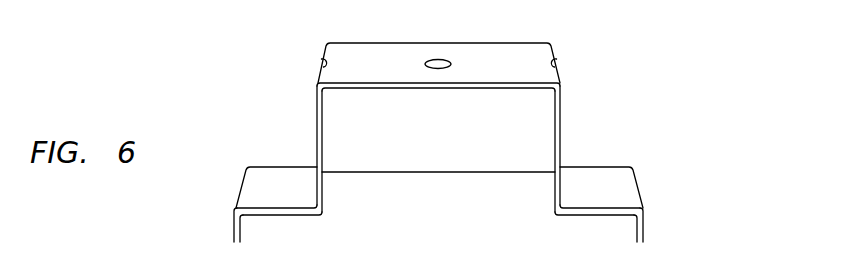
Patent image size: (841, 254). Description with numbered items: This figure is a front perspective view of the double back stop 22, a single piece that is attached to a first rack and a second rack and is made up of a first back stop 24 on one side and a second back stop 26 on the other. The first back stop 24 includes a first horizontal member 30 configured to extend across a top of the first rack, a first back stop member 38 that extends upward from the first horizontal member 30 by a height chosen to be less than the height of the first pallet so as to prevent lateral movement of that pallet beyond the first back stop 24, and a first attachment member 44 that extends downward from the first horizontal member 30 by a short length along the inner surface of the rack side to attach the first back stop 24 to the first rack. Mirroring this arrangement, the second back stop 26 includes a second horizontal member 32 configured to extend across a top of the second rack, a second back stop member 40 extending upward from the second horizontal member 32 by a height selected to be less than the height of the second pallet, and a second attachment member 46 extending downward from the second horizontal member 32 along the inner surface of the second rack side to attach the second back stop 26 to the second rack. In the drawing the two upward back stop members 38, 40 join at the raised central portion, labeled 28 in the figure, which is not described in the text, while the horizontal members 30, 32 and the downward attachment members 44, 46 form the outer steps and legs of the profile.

The double back stop 22 is at (631, 52).
The first back stop 24 is at (631, 132).
The second back stop 26 is at (260, 123).
The top wall 28 is at (477, 53).
The first horizontal member 30 is at (617, 190).
The second horizontal member 32 is at (260, 189).
The first back stop member 38 is at (563, 112).
The second back stop member 40 is at (317, 112).
The first attachment member 44 is at (645, 225).
The second attachment member 46 is at (233, 225).